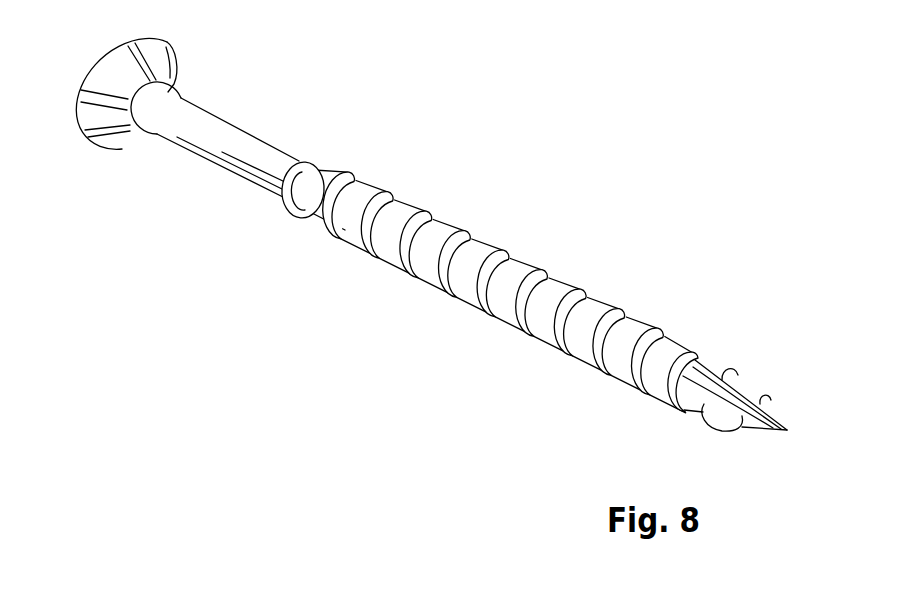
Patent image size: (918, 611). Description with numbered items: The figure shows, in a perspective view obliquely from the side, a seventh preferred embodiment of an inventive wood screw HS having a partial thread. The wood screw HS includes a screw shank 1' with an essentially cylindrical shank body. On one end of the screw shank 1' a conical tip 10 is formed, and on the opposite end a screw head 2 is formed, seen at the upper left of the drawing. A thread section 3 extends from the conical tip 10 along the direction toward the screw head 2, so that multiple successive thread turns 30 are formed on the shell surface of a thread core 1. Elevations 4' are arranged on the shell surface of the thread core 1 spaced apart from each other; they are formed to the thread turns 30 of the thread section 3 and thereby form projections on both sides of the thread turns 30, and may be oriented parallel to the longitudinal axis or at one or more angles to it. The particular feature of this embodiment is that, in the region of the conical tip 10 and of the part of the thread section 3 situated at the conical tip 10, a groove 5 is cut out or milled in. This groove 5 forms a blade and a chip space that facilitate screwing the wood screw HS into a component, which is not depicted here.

The screw head 2 is at (158, 62).
The screw shank 1' is at (245, 145).
The thread core 1 is at (471, 285).
The elevations 4' is at (506, 291).
The thread turns 30 is at (540, 273).
The thread section 3 is at (617, 318).
The groove 5 is at (735, 385).
The conical tip 10 is at (775, 413).
The wood screw HS is at (302, 227).